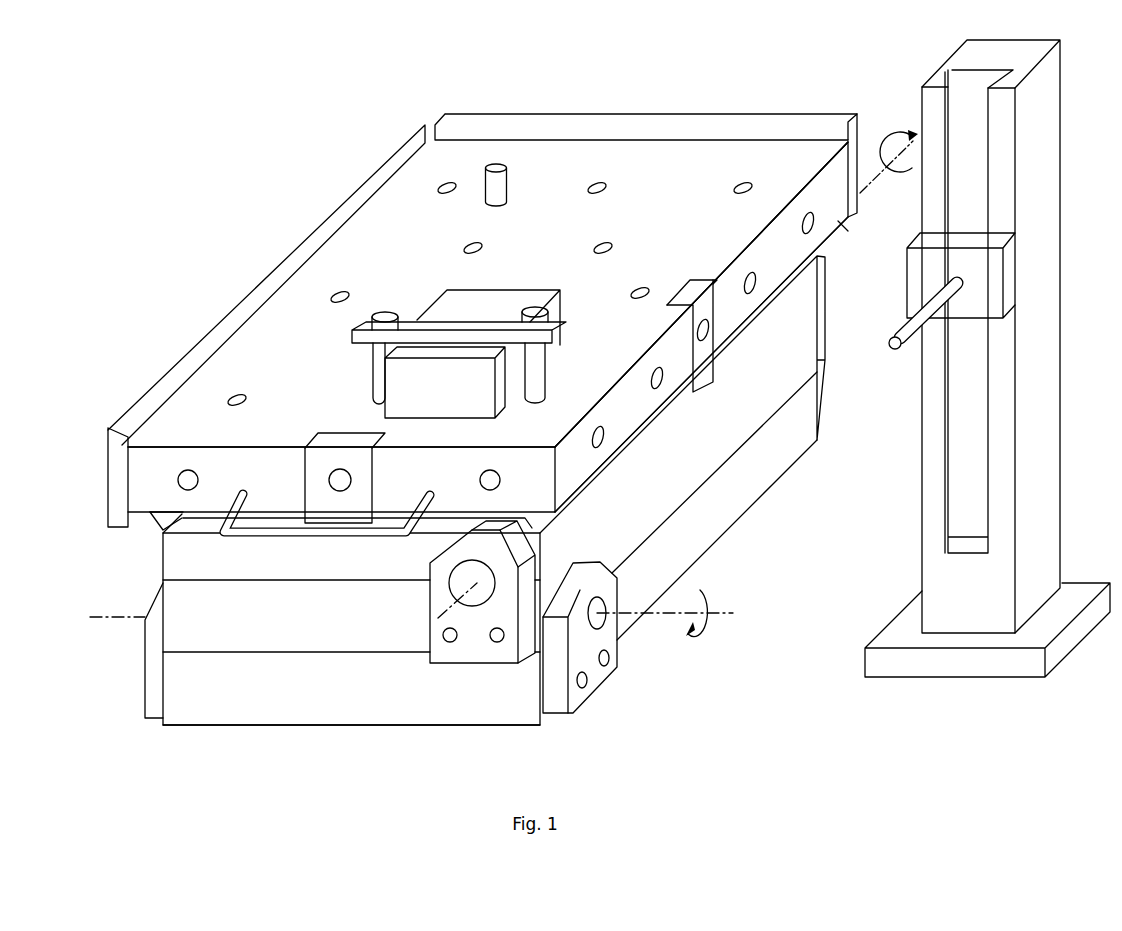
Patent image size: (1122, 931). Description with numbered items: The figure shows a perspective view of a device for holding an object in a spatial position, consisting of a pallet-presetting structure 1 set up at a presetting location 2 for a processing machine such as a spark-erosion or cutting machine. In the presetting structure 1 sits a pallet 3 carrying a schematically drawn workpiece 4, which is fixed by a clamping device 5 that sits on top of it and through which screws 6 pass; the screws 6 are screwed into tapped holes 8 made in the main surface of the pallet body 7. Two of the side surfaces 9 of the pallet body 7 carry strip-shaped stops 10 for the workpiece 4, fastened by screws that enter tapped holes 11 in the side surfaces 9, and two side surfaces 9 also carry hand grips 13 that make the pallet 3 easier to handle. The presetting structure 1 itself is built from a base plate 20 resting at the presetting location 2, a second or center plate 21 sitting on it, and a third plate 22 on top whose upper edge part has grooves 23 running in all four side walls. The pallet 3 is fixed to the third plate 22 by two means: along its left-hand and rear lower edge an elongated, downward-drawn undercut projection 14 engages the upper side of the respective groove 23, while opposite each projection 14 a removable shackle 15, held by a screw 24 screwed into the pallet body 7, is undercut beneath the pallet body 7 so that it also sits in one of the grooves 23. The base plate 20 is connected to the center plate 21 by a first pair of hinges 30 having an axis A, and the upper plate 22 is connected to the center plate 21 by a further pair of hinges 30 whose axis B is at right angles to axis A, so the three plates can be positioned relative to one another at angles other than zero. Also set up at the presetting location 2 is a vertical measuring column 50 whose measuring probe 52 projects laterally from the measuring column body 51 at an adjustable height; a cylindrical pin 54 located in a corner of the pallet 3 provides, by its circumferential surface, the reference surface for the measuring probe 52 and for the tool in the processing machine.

The pallet-presetting structure 1 is at (393, 120).
The presetting location 2 is at (494, 518).
The pallet 3 is at (273, 230).
The workpiece 4 is at (457, 307).
The clamping device 5 is at (417, 327).
The screws 6 is at (385, 317).
The pallet body 7 is at (688, 165).
The tapped holes 8 is at (742, 187).
The side surfaces 9 is at (777, 253).
The stops 10 is at (202, 343).
The tapped holes 11 is at (753, 283).
The hand grips 13 is at (242, 528).
The undercut projection 14 is at (147, 527).
The shackle 15 is at (343, 438).
The base plate 20 is at (345, 702).
The second plate 21 is at (340, 630).
The third plate 22 is at (338, 558).
The grooves 23 is at (200, 530).
The screw 24 is at (335, 480).
The hinges 30 is at (153, 673).
The vertical measuring column 50 is at (907, 570).
The measuring column body 51 is at (932, 525).
The measuring probe 52 is at (890, 340).
The cylindrical pin 54 is at (497, 167).
The axis A is at (630, 615).
The axis B is at (897, 153).